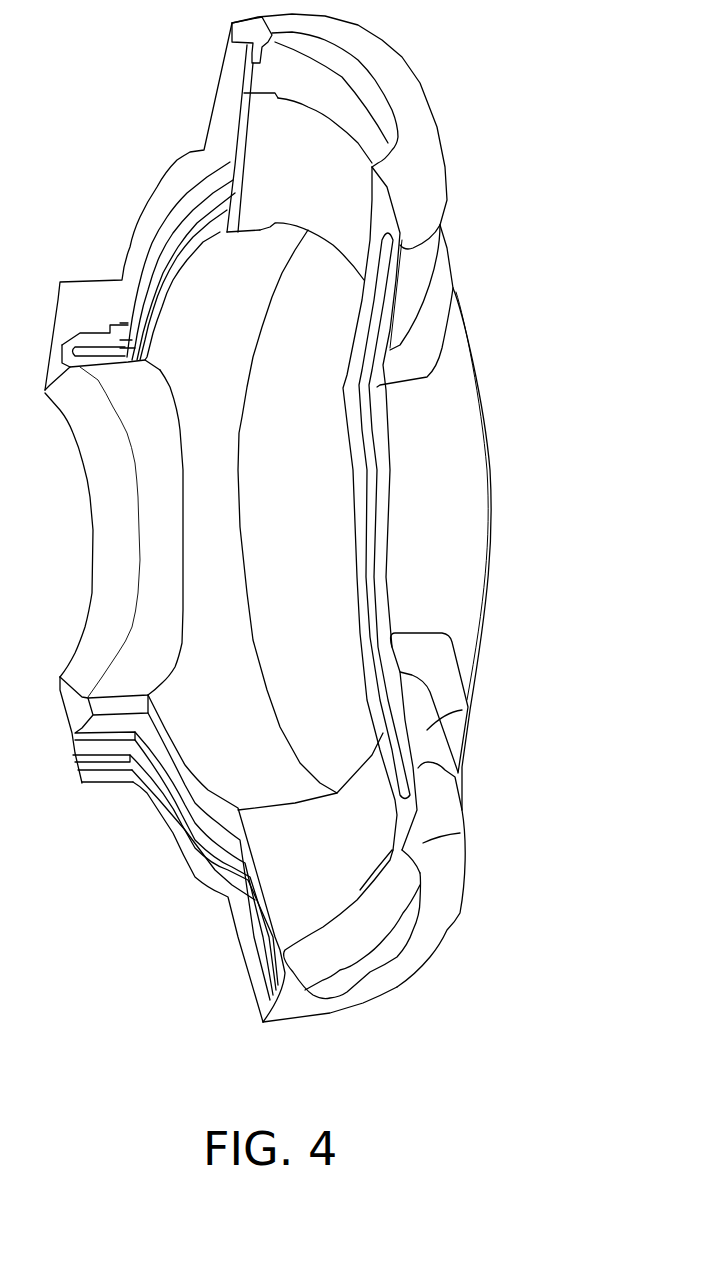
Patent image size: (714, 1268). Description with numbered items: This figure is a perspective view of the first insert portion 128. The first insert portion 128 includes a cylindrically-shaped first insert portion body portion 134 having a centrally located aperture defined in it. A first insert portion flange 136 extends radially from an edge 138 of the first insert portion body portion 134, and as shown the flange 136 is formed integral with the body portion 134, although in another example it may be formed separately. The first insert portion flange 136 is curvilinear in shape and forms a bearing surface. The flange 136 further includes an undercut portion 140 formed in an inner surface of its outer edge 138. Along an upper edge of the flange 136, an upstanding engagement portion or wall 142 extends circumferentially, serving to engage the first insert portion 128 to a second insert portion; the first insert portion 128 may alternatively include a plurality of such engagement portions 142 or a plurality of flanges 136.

The first insert portion 128 is at (489, 42).
The first insert portion body portion 134 is at (447, 433).
The first insert portion flange 136 is at (427, 733).
The edge 138 is at (427, 843).
The undercut portion 140 is at (297, 960).
The upstanding engagement portion or wall 142 is at (377, 678).